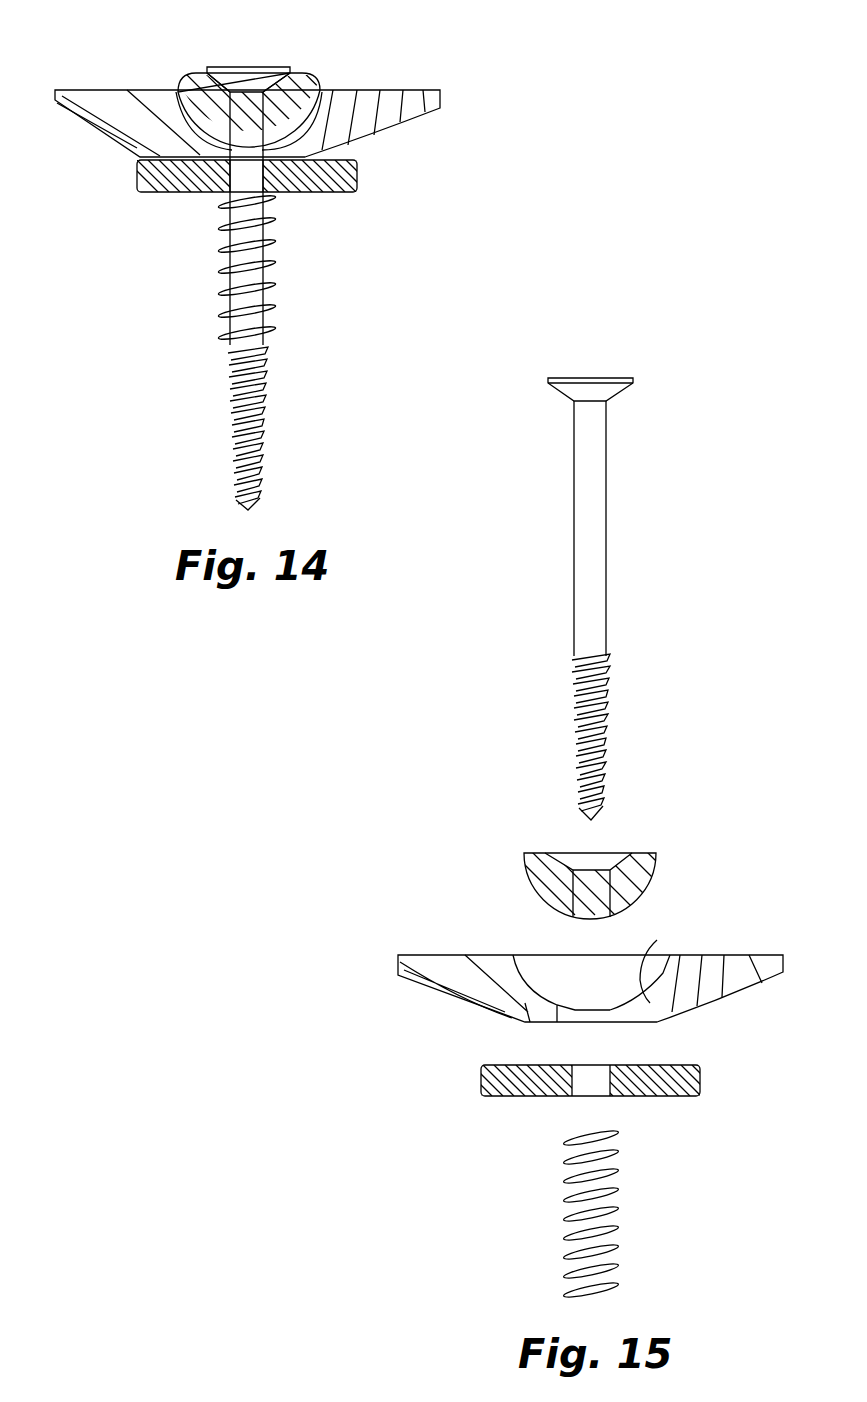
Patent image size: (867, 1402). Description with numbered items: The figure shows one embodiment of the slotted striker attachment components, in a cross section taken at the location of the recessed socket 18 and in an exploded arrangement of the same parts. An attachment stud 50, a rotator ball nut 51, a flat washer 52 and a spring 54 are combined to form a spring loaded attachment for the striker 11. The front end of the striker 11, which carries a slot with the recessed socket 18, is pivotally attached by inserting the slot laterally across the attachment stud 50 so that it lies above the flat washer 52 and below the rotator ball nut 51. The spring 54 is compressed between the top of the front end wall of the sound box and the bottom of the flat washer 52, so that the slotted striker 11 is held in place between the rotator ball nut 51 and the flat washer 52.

In FIG. 14, the striker 11 is at (445, 92).
In FIG. 15, the striker 11 is at (632, 953).
In FIG. 15, the recessed socket 18 is at (657, 950).
In FIG. 14, the attachment stud 50 is at (258, 62).
In FIG. 15, the attachment stud 50 is at (628, 407).
In FIG. 14, the rotator ball nut 51 is at (320, 76).
In FIG. 15, the rotator ball nut 51 is at (656, 853).
In FIG. 14, the flat washer 52 is at (357, 178).
In FIG. 15, the flat washer 52 is at (700, 1082).
In FIG. 14, the spring 54 is at (276, 325).
In FIG. 15, the spring 54 is at (620, 1205).